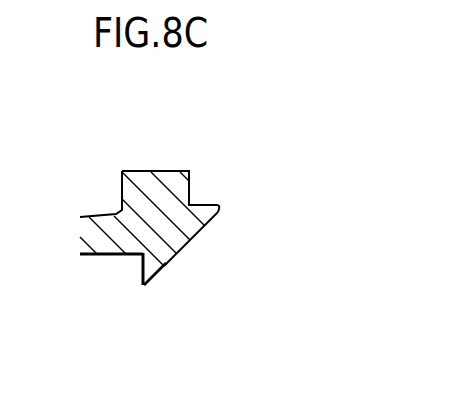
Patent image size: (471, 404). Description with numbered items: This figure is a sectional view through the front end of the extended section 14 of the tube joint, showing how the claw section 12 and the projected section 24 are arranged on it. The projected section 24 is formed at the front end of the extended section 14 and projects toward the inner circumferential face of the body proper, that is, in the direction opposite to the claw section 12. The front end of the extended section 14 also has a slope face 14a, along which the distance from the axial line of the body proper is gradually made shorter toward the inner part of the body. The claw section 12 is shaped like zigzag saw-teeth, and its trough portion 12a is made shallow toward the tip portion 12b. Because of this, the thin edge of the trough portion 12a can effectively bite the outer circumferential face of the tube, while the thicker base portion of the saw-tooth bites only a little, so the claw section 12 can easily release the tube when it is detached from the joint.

The claw section 12 is at (148, 315).
The trough portion 12a is at (160, 266).
The tip portion 12b is at (155, 270).
The extended section 14 is at (98, 232).
The slope face 14a is at (192, 239).
The projected section 24 is at (158, 190).